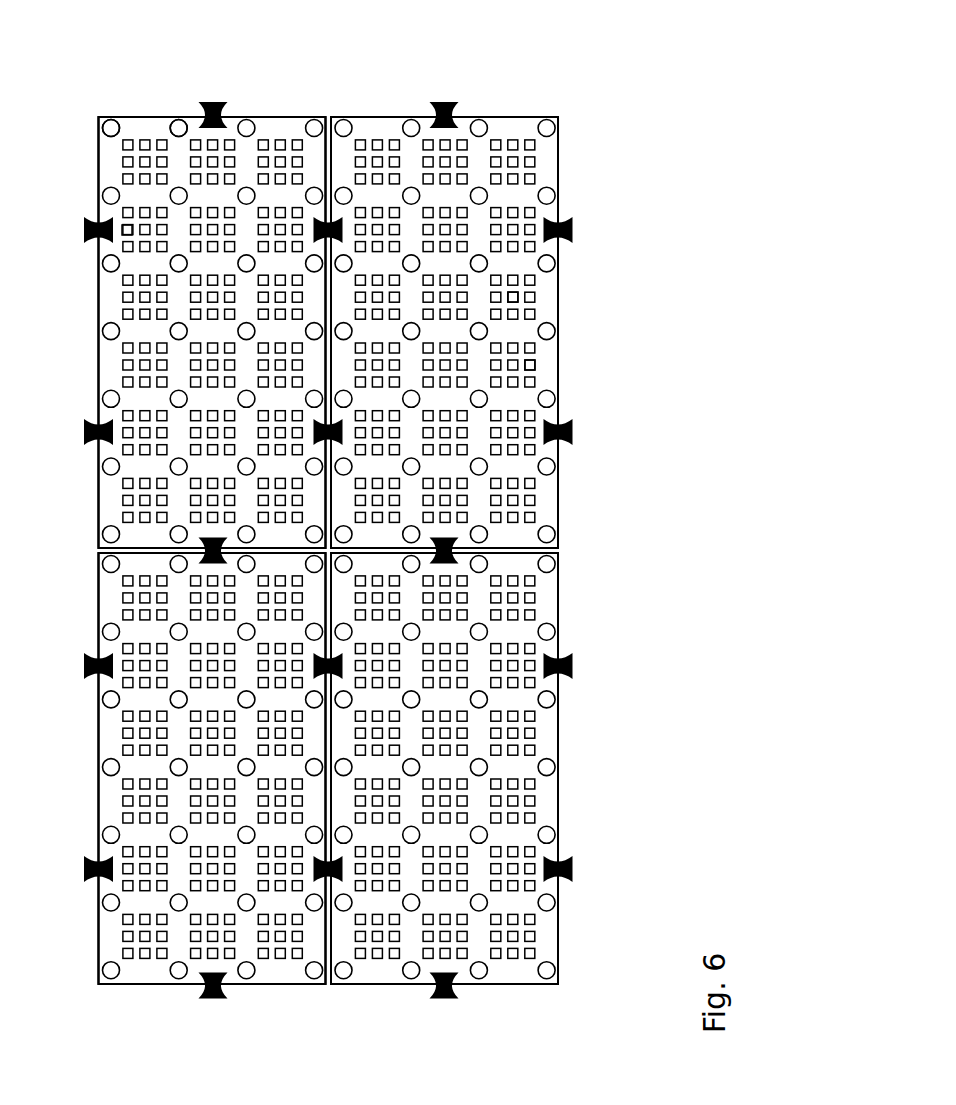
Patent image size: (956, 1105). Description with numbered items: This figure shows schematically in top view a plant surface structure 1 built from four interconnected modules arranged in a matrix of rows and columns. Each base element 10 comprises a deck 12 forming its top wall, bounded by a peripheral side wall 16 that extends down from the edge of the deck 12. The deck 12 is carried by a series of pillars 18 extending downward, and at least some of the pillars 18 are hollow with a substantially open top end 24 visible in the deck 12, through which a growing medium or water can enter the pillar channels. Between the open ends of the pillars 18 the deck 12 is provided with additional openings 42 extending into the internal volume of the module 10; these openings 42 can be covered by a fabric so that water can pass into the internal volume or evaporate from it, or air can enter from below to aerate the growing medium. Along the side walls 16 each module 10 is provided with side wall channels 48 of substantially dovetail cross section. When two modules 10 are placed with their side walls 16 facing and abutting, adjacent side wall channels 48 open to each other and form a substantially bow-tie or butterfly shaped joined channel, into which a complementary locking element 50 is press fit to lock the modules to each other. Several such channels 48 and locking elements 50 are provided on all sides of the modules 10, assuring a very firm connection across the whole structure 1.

The plant surface structure 1 is at (234, 74).
The base element 10 is at (299, 128).
The deck 12 is at (545, 160).
The peripheral side wall 16 is at (266, 117).
The pillar 18 is at (172, 118).
The open top end 24 is at (111, 128).
The opening 42 is at (514, 297).
The side wall channel 48 is at (107, 228).
The locking element 50 is at (84, 230).